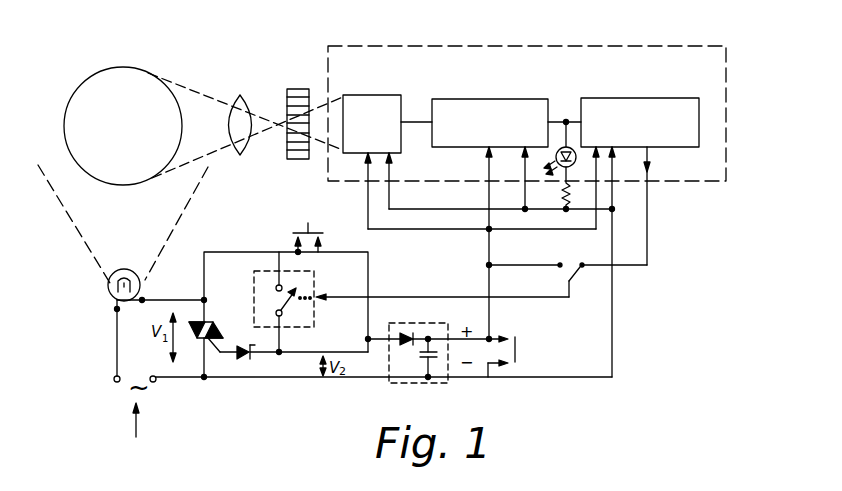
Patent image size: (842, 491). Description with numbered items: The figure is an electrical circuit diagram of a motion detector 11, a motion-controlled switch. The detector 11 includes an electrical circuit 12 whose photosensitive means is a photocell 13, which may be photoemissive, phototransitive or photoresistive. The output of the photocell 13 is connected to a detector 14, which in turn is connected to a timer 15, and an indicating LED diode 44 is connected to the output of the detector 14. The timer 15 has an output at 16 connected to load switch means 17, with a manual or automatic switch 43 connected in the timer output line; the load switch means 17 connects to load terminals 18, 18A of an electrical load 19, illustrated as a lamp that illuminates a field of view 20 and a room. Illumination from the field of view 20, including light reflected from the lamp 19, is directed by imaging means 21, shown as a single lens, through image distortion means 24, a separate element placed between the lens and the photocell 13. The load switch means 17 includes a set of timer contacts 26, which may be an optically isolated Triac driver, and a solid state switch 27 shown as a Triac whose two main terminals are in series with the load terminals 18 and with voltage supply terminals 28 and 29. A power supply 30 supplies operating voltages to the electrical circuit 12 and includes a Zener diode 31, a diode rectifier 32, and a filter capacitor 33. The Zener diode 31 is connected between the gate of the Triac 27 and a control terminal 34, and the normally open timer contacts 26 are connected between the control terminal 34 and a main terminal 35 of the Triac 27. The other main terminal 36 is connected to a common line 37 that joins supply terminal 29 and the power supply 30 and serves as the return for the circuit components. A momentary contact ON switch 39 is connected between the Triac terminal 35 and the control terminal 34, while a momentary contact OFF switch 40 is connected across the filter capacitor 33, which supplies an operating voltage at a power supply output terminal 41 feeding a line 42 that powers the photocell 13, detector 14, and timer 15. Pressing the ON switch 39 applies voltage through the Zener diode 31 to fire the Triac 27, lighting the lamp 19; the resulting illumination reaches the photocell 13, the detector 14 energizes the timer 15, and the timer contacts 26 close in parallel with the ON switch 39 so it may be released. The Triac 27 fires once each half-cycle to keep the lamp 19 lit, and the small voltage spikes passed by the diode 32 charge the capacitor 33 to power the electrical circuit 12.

The motion detector 11 is at (307, 35).
The electrical circuit 12 is at (401, 46).
The photocell 13 is at (372, 95).
The detector 14 is at (483, 98).
The timer 15 is at (640, 97).
The timer output 16 is at (648, 199).
The load switch means 17 is at (253, 289).
The load terminal 18 is at (117, 310).
The load terminal 18A is at (143, 299).
The electrical load 19 is at (109, 288).
The field of view 20 is at (123, 66).
The imaging means 21 is at (235, 97).
The image distortion means 24 is at (286, 107).
The timer contacts 26 is at (313, 281).
The solid state switch 27 is at (218, 333).
The voltage supply terminal 28 is at (114, 386).
The voltage supply terminal 29 is at (157, 384).
The power supply 30 is at (418, 353).
The Zener diode 31 is at (242, 360).
The diode rectifier 32 is at (402, 332).
The filter capacitor 33 is at (436, 360).
The control terminal 34 is at (368, 338).
The main terminal 35 is at (192, 322).
The main terminal 36 is at (203, 340).
The common line 37 is at (281, 378).
The ON switch 39 is at (316, 232).
The OFF switch 40 is at (522, 343).
The power supply output terminal 41 is at (494, 336).
The line 42 is at (425, 231).
The manual or automatic switch 43 is at (560, 272).
The indicating LED diode 44 is at (552, 166).